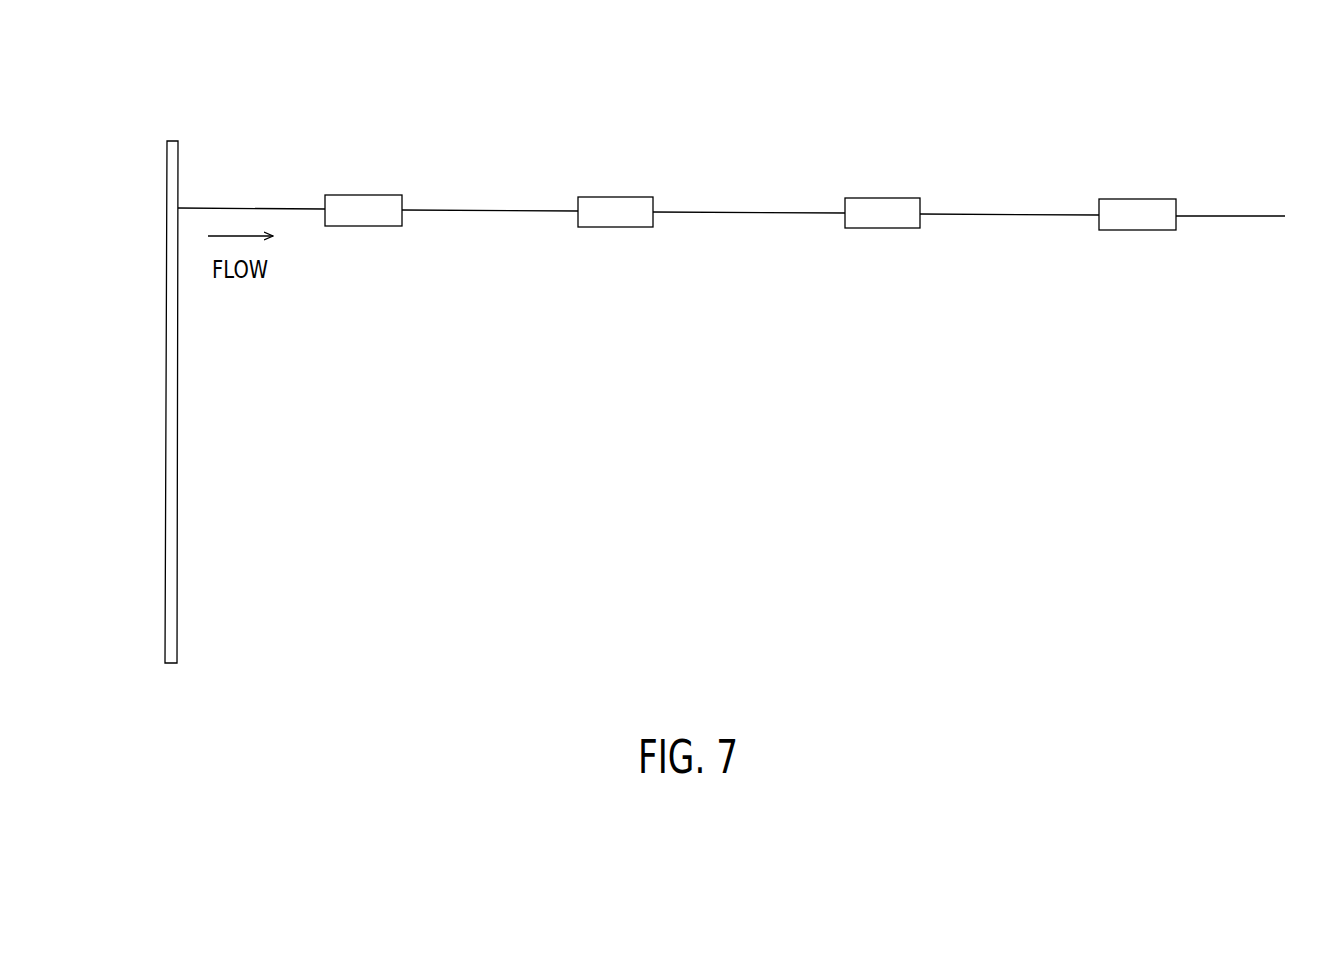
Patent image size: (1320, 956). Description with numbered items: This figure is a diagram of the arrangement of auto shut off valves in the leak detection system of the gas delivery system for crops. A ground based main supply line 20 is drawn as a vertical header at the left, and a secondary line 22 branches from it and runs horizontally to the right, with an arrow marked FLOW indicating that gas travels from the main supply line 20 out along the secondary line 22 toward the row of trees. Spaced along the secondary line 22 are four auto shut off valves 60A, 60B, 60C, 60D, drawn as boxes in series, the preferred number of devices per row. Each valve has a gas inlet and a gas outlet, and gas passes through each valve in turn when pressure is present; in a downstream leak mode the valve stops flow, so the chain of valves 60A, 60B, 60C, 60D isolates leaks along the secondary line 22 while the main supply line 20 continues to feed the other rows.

The main supply line 20 is at (168, 352).
The secondary line 22 is at (252, 208).
The auto shut off valve 60A is at (358, 186).
The auto shut off valve 60B is at (618, 188).
The auto shut off valve 60C is at (882, 178).
The auto shut off valve 60D is at (1142, 192).